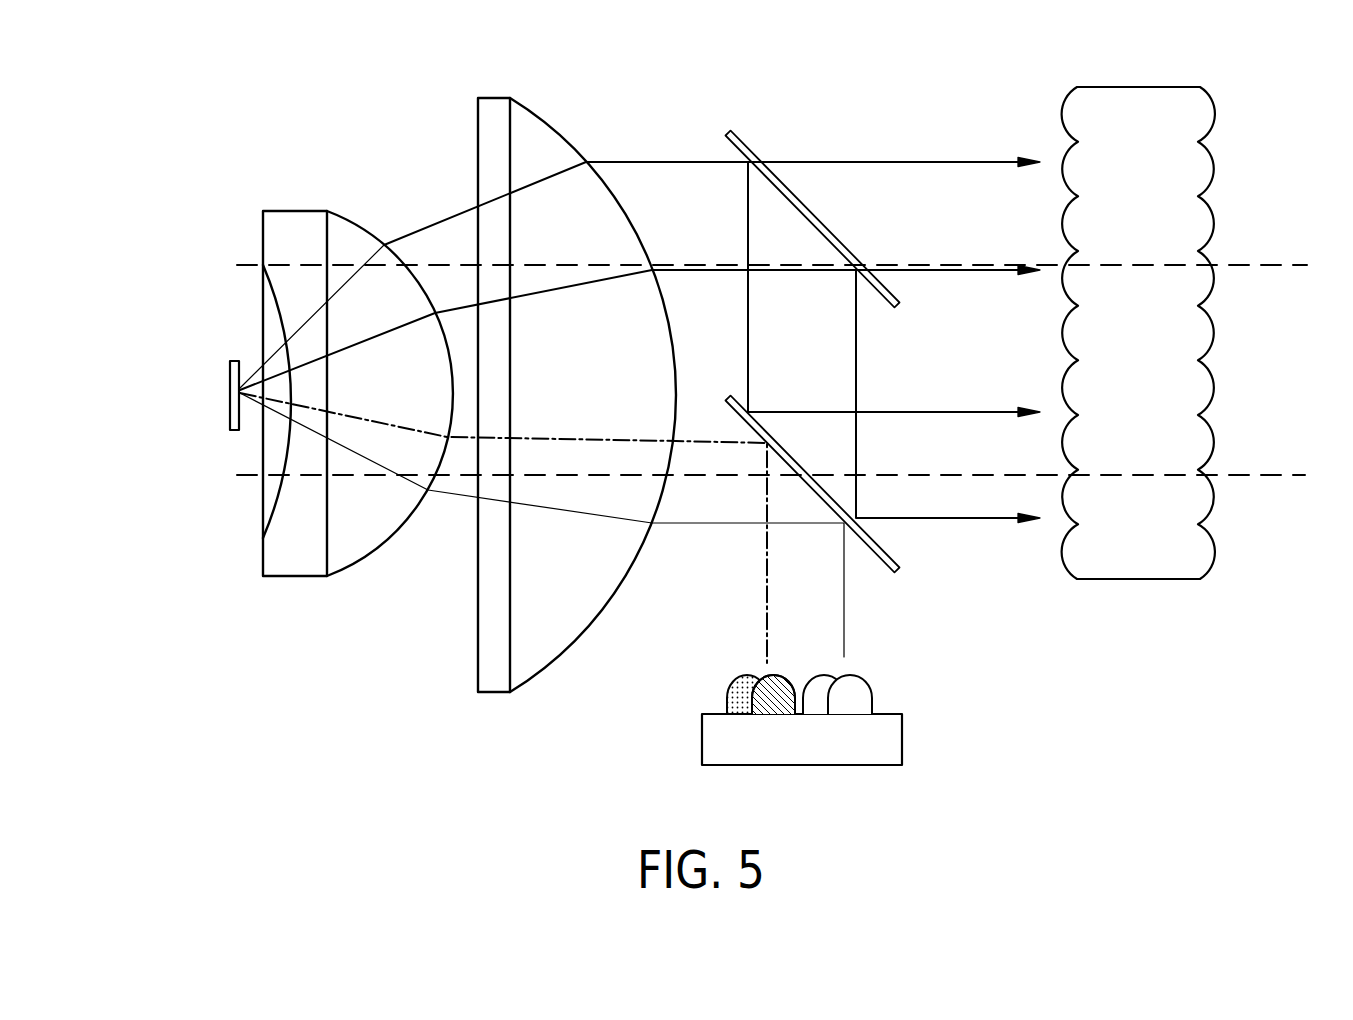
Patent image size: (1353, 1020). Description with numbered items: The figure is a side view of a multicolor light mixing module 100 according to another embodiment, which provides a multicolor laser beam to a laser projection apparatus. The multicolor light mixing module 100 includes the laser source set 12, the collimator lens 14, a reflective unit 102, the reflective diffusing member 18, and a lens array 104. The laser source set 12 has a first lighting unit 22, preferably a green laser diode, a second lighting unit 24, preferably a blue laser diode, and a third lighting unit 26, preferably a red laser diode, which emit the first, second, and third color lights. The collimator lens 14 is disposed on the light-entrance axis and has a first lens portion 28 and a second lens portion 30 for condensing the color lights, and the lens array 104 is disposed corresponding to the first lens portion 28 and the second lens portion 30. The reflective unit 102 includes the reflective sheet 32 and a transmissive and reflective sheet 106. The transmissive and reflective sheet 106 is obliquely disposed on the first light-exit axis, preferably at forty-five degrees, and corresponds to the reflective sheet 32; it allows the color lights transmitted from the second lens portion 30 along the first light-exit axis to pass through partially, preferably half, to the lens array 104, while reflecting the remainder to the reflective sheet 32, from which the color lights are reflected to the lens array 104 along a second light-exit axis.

The multicolor light mixing module 100 is at (200, 93).
The laser source set 12 is at (915, 701).
The collimator lens 14 is at (356, 321).
The reflective diffusing member 18 is at (228, 372).
The first lighting unit 22 is at (768, 707).
The second lighting unit 24 is at (735, 714).
The third lighting unit 26 is at (850, 707).
The first lens portion 28 is at (538, 635).
The second lens portion 30 is at (563, 212).
The reflective sheet 32 is at (888, 550).
The reflective unit 102 is at (855, 203).
The lens array 104 is at (1170, 85).
The transmissive and reflective sheet 106 is at (785, 187).